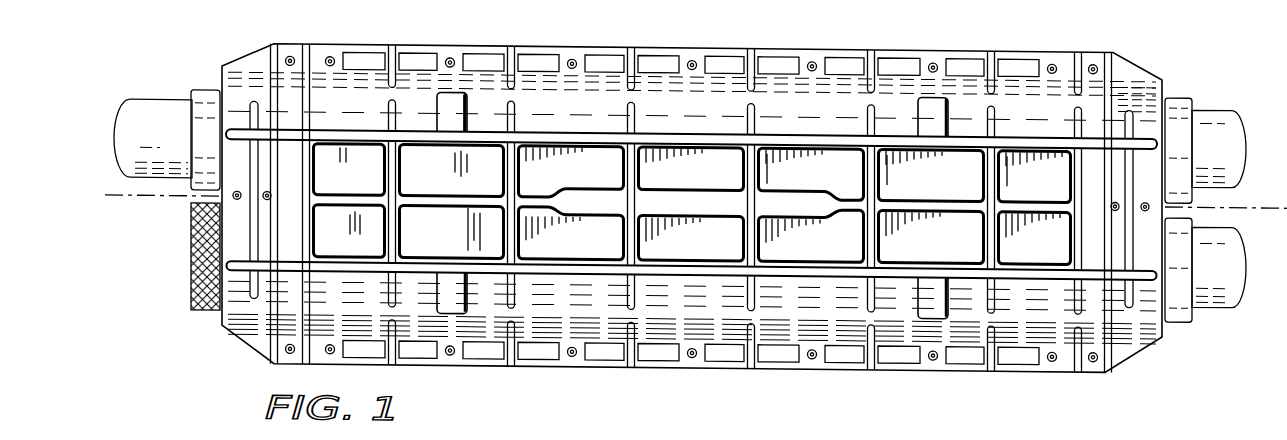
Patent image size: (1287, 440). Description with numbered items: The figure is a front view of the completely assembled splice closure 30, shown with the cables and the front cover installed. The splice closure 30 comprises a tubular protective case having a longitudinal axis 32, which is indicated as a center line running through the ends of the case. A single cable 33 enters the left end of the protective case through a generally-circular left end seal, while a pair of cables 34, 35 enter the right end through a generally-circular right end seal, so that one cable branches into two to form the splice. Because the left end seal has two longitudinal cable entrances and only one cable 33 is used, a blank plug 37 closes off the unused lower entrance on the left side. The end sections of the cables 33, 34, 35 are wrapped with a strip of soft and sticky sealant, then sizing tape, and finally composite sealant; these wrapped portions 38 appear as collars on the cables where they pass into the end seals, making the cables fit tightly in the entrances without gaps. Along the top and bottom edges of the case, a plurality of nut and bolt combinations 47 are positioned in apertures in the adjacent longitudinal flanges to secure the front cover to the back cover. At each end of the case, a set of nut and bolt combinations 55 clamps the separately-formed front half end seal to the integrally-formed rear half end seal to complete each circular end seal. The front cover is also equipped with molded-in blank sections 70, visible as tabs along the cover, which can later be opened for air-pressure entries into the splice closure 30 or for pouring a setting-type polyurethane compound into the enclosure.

The splice closure 30 is at (862, 38).
The longitudinal axis 32 is at (143, 200).
The cable 33 is at (150, 139).
The cable 34 is at (1222, 109).
The cable 35 is at (1222, 289).
The blank plug 37 is at (195, 302).
The wrapped portions of the cables 38 is at (200, 104).
The nut and bolt combinations 47 is at (454, 57).
The nut and bolt combinations 55 is at (270, 193).
The blank sections 70 is at (453, 118).